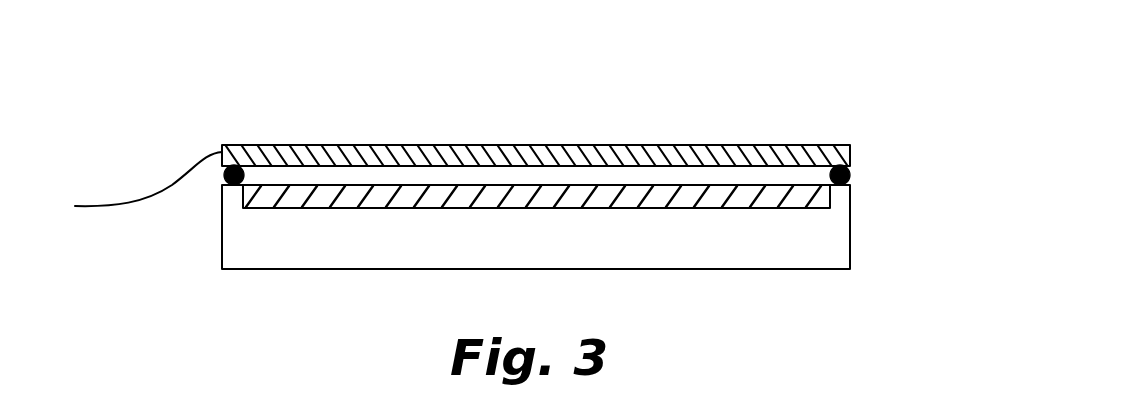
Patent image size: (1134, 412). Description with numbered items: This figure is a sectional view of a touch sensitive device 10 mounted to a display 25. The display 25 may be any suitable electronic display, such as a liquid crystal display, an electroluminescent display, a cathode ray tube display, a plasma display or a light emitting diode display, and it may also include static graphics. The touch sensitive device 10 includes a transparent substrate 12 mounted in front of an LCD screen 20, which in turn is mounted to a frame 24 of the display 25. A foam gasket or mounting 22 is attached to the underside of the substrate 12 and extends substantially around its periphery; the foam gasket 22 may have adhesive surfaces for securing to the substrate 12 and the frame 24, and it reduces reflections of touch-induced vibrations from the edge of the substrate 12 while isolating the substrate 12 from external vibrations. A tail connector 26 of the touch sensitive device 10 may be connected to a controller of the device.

The touch sensitive device 10 is at (316, 73).
The transparent substrate 12 is at (687, 143).
The LCD screen 20 is at (493, 180).
The foam gasket 22 is at (864, 170).
The frame 24 is at (826, 230).
The display 25 is at (297, 282).
The tail connector 26 is at (152, 193).